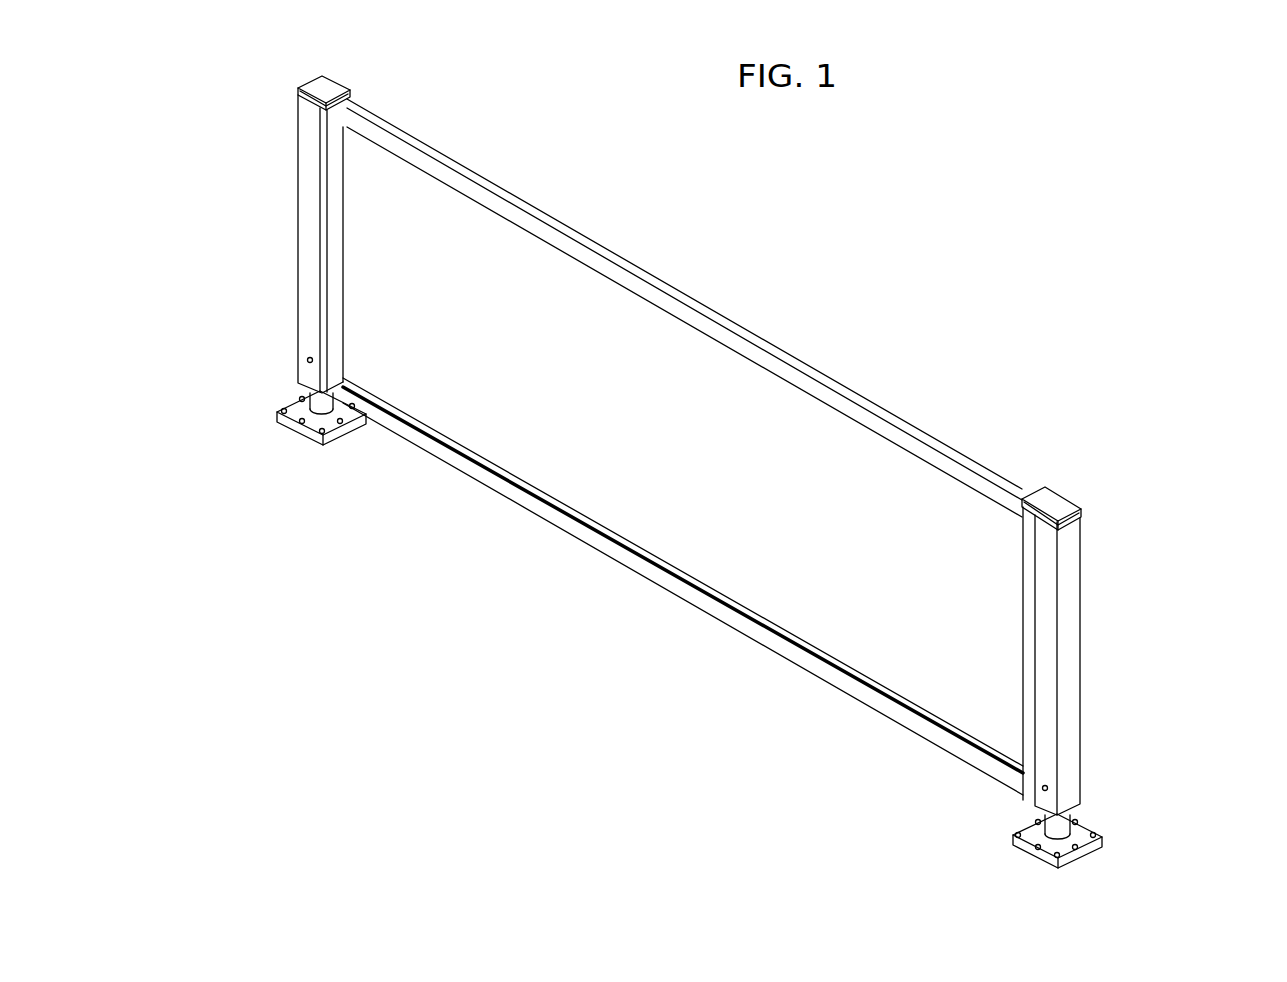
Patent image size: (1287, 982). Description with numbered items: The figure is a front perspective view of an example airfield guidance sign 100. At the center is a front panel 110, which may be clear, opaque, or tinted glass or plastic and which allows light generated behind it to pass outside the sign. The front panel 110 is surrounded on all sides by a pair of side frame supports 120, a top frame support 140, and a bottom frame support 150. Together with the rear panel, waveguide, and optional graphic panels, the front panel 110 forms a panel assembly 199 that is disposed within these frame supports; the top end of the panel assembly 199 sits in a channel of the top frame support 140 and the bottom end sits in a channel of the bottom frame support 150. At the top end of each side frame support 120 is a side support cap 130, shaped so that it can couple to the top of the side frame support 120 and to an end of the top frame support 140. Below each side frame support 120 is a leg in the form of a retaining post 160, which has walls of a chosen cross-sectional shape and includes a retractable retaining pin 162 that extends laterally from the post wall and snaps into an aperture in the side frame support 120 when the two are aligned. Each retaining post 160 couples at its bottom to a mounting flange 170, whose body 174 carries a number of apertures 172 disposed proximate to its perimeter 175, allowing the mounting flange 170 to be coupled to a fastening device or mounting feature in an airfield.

The airfield guidance sign 100 is at (1092, 274).
The front panel 110 is at (683, 462).
The side frame supports 120 is at (298, 222).
The side support caps 130 is at (312, 83).
The top frame support 140 is at (437, 152).
The bottom frame support 150 is at (535, 505).
The legs 160 is at (313, 398).
The retaining pin 162 is at (1060, 798).
The mounting flanges 170 is at (295, 433).
The apertures 172 is at (347, 419).
The body 174 is at (1080, 832).
The perimeter 175 is at (1088, 848).
The panel assembly 199 is at (767, 580).